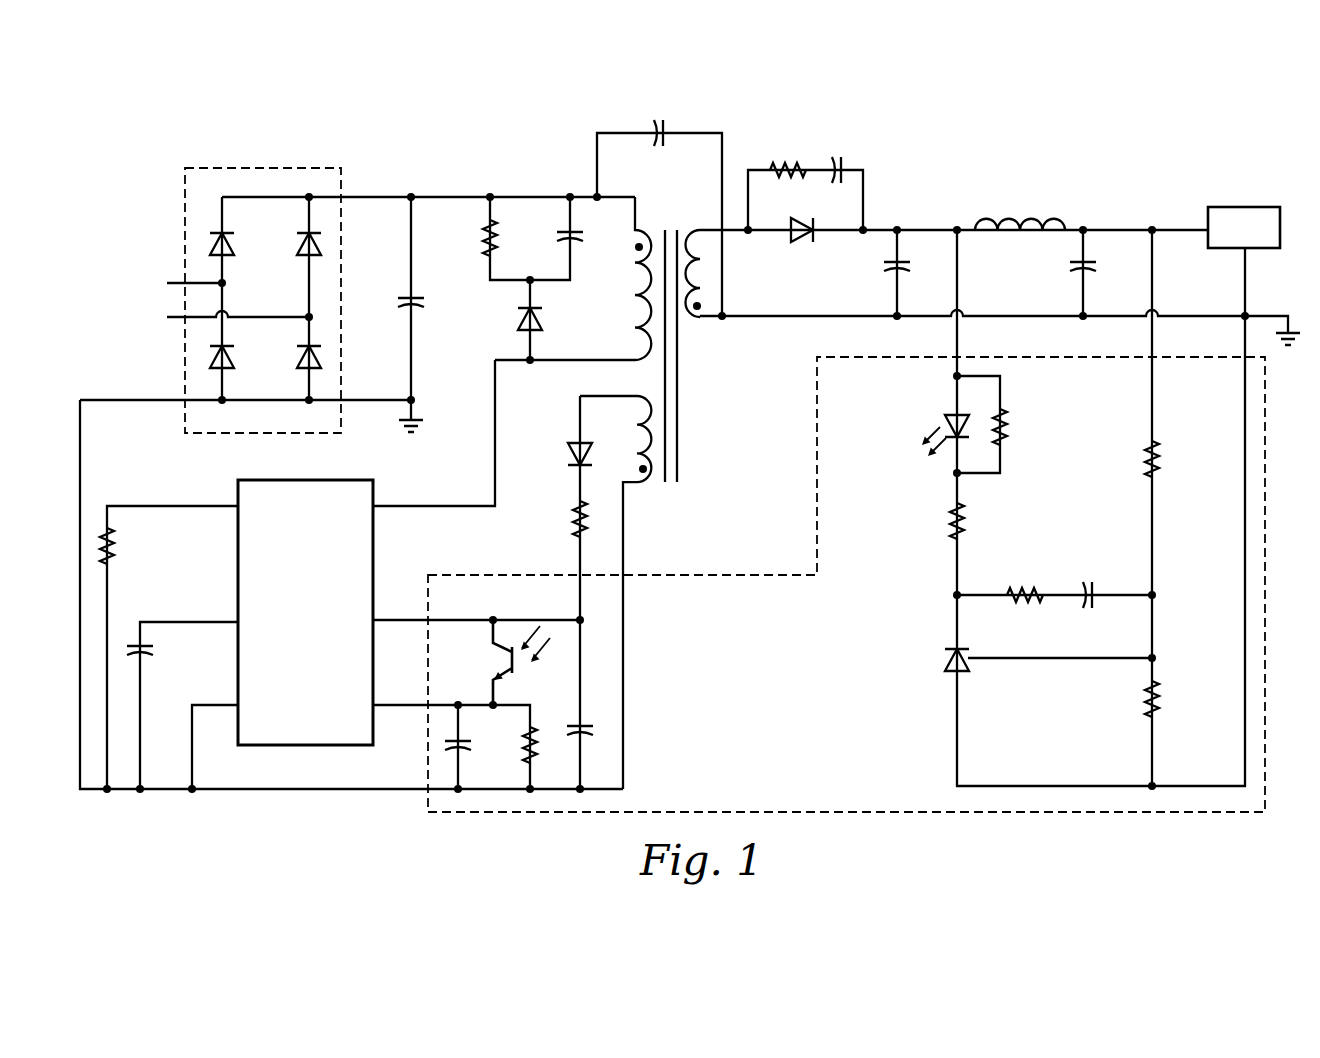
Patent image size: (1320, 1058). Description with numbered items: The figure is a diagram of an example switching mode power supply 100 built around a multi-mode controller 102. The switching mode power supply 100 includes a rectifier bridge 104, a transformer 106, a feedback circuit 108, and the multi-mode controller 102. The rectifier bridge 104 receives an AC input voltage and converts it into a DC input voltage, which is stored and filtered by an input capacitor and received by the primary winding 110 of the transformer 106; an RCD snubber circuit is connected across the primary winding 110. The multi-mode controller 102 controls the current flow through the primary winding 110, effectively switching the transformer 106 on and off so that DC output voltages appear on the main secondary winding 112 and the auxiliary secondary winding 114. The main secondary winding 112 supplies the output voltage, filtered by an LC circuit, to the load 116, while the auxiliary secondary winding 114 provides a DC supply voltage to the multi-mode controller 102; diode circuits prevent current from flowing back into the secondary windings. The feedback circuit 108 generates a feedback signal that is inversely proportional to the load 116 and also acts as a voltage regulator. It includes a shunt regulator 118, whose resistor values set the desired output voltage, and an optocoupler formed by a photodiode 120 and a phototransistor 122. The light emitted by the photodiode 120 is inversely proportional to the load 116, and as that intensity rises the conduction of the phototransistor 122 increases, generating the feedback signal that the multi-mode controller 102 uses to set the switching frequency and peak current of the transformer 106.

The switching mode power supply 100 is at (1052, 146).
The multi-mode controller 102 is at (320, 480).
The rectifier bridge 104 is at (263, 168).
The transformer 106 is at (690, 224).
The feedback circuit 108 is at (817, 472).
The primary winding 110 is at (640, 282).
The main secondary winding 112 is at (688, 320).
The auxiliary secondary winding 114 is at (655, 485).
The load 116 is at (1240, 207).
The shunt regulator 118 is at (1093, 462).
The photodiode 120 is at (935, 412).
The phototransistor 122 is at (528, 677).